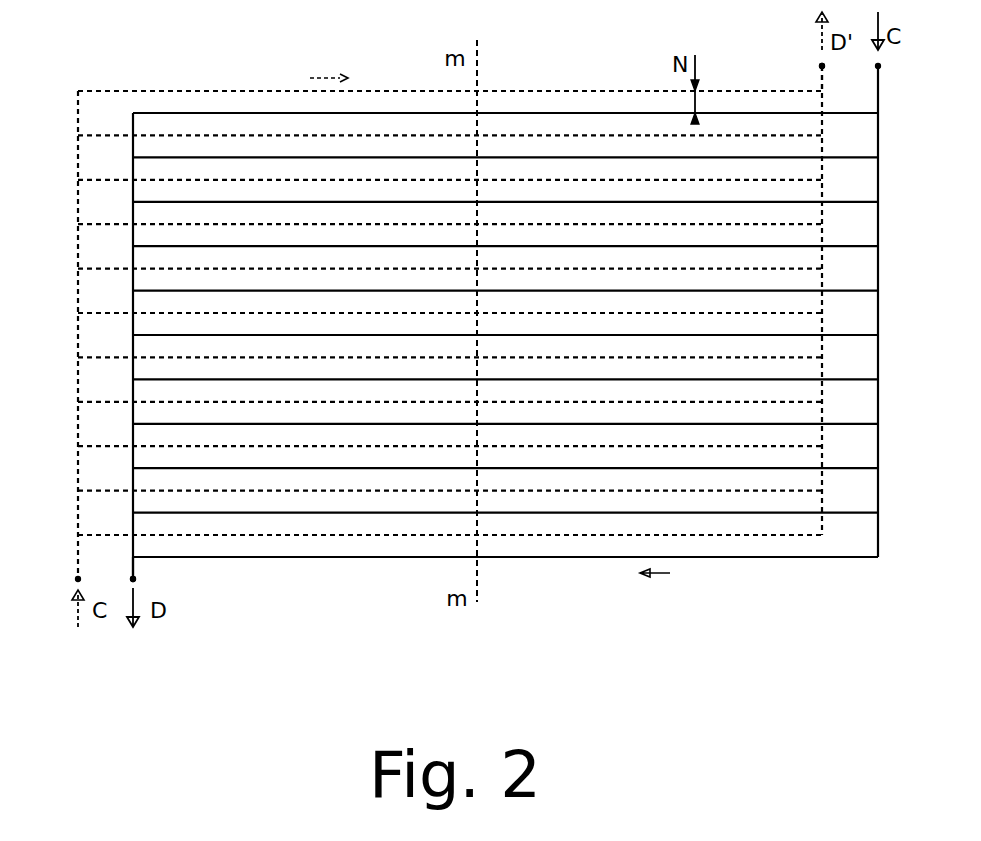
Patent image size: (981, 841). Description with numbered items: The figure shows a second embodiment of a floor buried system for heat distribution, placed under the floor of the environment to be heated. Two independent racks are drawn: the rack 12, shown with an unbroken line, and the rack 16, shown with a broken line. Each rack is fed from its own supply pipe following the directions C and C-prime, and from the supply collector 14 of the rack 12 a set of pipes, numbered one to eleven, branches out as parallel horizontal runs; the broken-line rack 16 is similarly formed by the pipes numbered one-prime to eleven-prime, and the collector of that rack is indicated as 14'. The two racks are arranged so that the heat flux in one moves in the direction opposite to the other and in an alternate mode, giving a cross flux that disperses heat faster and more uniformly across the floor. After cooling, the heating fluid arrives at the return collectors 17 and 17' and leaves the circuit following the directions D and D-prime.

The rack 12 is at (597, 112).
The supply collector 14 is at (520, 323).
The second strand (dashed serpentine winding) 14' is at (440, 323).
The rack 16 is at (508, 89).
The return collector 17 is at (173, 581).
The return collector 17' is at (785, 57).